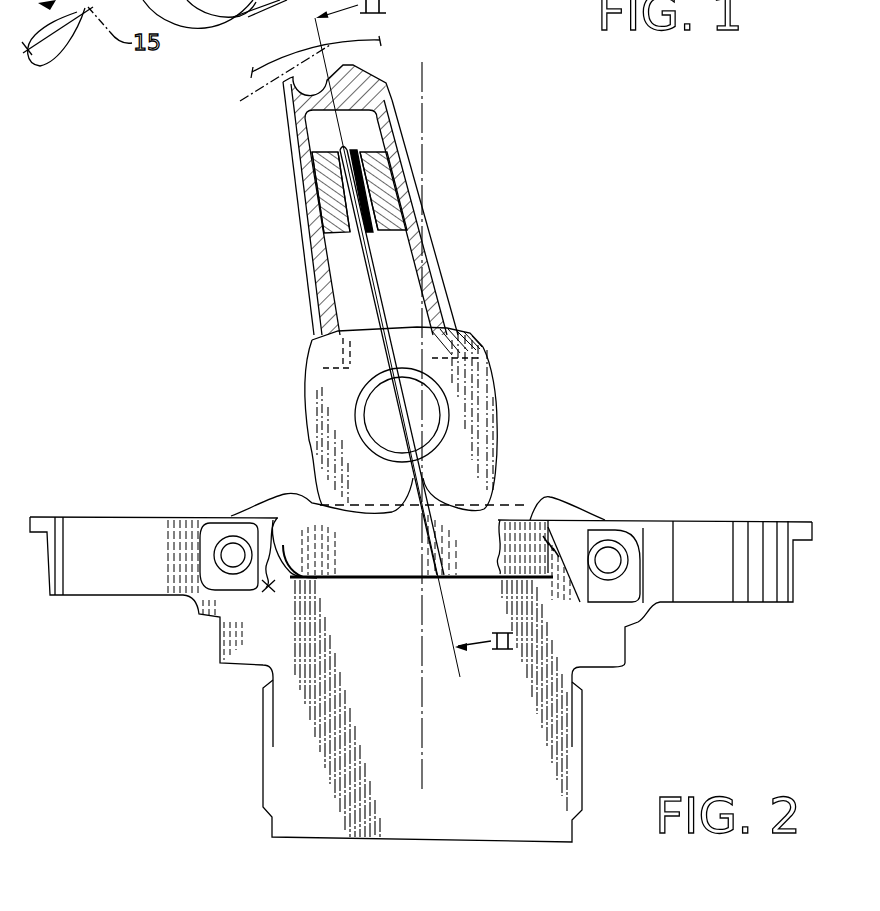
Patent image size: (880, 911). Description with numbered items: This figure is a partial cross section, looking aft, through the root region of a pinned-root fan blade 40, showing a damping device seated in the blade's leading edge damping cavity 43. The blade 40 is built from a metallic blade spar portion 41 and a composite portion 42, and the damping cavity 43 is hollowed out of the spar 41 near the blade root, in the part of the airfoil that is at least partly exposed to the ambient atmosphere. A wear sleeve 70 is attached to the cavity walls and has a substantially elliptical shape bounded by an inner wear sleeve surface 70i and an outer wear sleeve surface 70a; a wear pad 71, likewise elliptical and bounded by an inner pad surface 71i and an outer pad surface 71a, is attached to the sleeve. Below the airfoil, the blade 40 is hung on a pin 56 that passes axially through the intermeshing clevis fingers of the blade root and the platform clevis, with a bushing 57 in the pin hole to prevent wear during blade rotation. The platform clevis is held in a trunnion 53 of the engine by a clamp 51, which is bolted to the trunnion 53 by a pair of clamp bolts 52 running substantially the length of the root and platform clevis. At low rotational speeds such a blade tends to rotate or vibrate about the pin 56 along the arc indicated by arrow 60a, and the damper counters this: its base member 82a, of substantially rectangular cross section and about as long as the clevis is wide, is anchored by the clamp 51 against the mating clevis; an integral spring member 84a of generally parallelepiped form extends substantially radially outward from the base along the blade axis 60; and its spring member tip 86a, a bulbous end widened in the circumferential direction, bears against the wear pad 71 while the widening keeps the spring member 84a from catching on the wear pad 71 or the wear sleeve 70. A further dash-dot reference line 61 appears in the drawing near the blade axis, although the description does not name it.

The fan blade 40 is at (409, 115).
The blade spar portion 41 is at (432, 257).
The composite portion 42 is at (443, 287).
The leading edge damping cavity 43 is at (350, 290).
The clamp 51 is at (264, 584).
The clamp bolts 52 is at (233, 551).
The trunnion 53 is at (603, 655).
The pin 56 is at (432, 402).
The bushing 57 is at (448, 422).
The blade axis 60 is at (280, 80).
The arrow indicating arc of blade rotation 60a is at (357, 40).
The axis 61 is at (432, 212).
The wear sleeve 70 is at (327, 227).
The outer wear sleeve surface 70a is at (307, 170).
The inner wear sleeve surface 70i is at (325, 200).
The wear pad 71 is at (352, 217).
The outer pad surface 71a is at (352, 162).
The inner pad surface 71i is at (357, 147).
The base member 82a is at (483, 532).
The spring member 84a is at (377, 318).
The spring member tip 86a is at (362, 188).